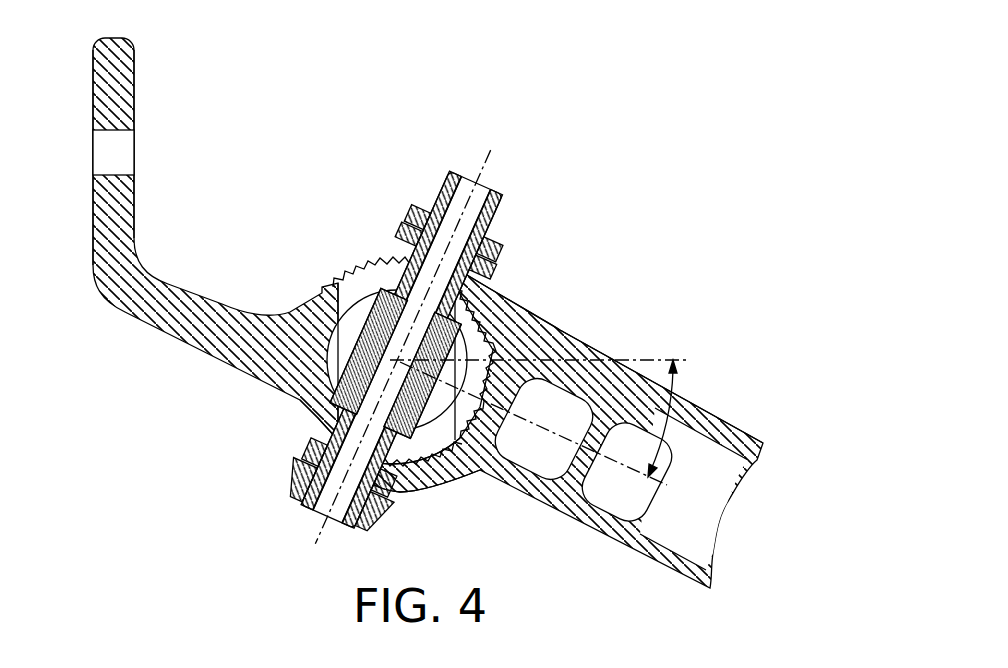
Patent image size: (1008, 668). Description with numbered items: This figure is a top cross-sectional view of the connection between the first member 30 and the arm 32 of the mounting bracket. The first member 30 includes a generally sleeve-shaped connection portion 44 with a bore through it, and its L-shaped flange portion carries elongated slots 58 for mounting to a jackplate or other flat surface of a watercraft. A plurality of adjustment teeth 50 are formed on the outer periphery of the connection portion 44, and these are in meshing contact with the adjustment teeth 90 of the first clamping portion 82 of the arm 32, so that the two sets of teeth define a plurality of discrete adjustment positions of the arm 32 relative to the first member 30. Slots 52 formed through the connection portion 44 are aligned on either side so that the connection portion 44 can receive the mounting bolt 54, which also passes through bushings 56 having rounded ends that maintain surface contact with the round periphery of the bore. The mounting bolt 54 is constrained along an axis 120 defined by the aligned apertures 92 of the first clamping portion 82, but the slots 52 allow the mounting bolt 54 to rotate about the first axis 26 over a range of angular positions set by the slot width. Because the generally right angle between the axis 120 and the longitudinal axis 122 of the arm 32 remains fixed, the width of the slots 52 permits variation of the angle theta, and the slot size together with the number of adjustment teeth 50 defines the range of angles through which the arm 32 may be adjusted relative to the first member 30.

The first axis 26 is at (330, 412).
The first member 30 is at (107, 293).
The arm 32 is at (727, 428).
The connection portion 44 is at (300, 402).
The adjustment teeth 50 is at (368, 262).
The slots 52 is at (330, 281).
The mounting bolt 54 is at (307, 512).
The bushings 56 is at (335, 318).
The elongated slots 58 is at (118, 173).
The first clamping portion 82 is at (520, 306).
The adjustment teeth 90 is at (500, 348).
The apertures 92 is at (495, 276).
The axis 120 is at (492, 150).
The longitudinal axis 122 is at (635, 470).